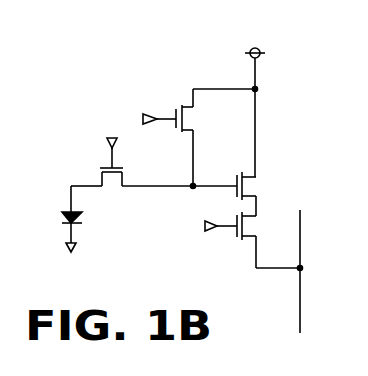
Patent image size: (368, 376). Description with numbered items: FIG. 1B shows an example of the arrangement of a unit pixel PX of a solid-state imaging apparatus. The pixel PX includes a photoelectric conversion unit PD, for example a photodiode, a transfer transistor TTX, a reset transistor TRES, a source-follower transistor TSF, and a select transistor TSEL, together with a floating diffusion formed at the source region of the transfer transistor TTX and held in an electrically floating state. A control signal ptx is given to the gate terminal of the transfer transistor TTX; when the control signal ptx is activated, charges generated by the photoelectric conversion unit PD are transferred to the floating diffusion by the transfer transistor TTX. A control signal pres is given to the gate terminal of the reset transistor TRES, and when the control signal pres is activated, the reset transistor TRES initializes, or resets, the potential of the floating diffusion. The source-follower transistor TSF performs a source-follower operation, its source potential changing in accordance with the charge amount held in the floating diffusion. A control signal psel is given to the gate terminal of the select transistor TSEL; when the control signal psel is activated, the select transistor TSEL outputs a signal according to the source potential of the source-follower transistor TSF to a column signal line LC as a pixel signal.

The unit pixel PX is at (101, 71).
The control signal pres is at (146, 107).
The reset transistor TRES is at (209, 121).
The control signal ptx is at (93, 148).
The transfer transistor TTX is at (109, 190).
The photoelectric conversion unit PD is at (54, 219).
The source-follower transistor TSF is at (258, 183).
The select transistor TSEL is at (258, 226).
The control signal psel is at (210, 240).
The column signal line LC is at (300, 301).